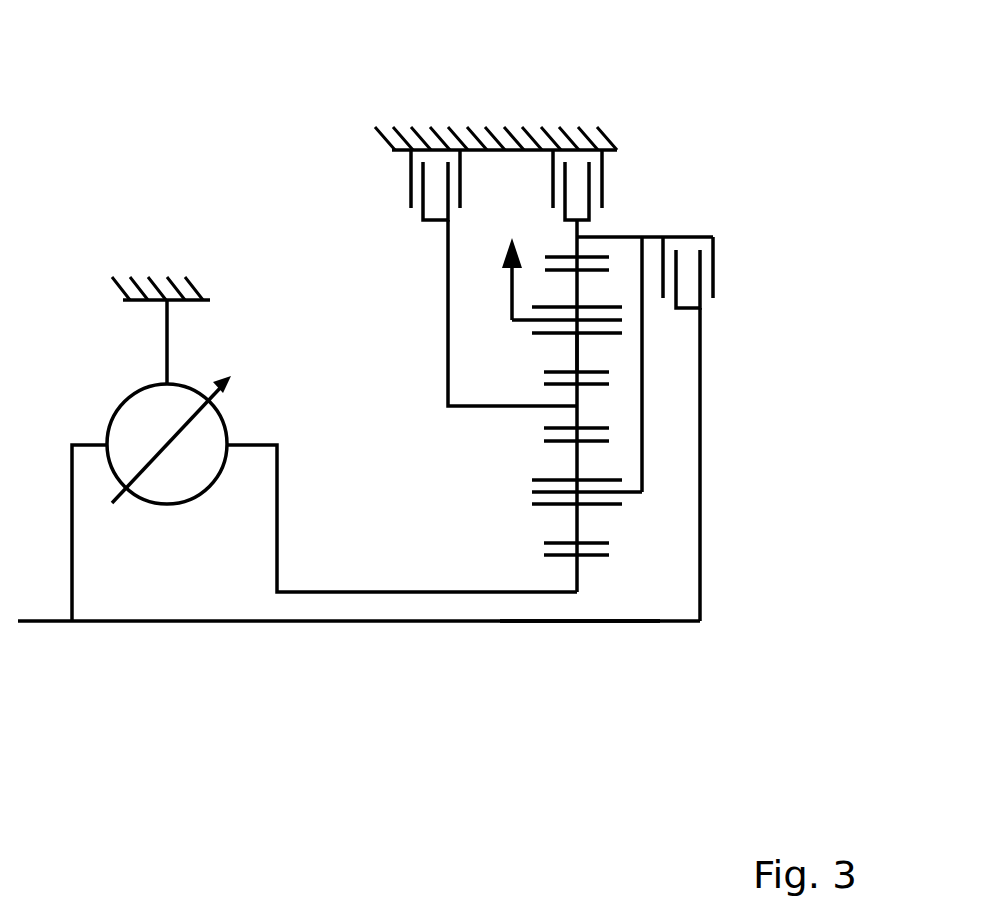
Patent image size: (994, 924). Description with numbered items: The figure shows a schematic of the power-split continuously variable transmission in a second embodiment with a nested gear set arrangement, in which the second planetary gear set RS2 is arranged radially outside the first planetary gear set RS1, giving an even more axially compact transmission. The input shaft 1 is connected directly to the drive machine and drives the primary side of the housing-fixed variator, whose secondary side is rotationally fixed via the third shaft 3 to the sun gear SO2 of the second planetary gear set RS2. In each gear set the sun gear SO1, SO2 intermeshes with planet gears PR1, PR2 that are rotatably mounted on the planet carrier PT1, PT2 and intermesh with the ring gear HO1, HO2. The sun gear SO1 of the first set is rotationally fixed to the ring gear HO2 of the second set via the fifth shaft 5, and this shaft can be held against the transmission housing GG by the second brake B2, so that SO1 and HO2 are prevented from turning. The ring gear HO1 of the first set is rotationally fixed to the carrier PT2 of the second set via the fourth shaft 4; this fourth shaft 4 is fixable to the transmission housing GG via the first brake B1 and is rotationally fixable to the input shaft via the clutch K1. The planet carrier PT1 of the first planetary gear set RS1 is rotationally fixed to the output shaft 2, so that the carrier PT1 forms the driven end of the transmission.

The input shaft 1 is at (45, 621).
The output shaft 2 is at (448, 360).
The third shaft 3 is at (400, 592).
The fourth shaft 4 is at (630, 237).
The fifth shaft 5 is at (512, 297).
The first shift element B1 is at (395, 180).
The third shift element B2 is at (614, 178).
The transmission housing GG is at (437, 150).
The second shift element K1 is at (730, 270).
The ring gear of the first planetary gear set HO1 is at (597, 257).
The planet gears of the first planetary gear set PR1 is at (578, 283).
The planet carrier of the first planetary gear set PT1 is at (606, 348).
The sun gear of the first planetary gear set SO1 is at (605, 385).
The ring gear of the second planetary gear set HO2 is at (597, 429).
The planet carrier of the second planetary gear set PT2 is at (642, 511).
The planet gears of the second planetary gear set PR2 is at (578, 516).
The sun gear of the second planetary gear set SO2 is at (592, 557).
The first planetary gear set RS1 is at (576, 650).
The second planetary gear set RS2 is at (580, 702).